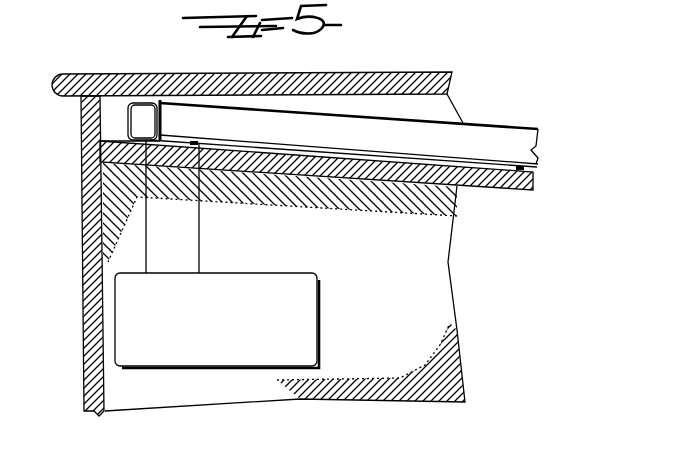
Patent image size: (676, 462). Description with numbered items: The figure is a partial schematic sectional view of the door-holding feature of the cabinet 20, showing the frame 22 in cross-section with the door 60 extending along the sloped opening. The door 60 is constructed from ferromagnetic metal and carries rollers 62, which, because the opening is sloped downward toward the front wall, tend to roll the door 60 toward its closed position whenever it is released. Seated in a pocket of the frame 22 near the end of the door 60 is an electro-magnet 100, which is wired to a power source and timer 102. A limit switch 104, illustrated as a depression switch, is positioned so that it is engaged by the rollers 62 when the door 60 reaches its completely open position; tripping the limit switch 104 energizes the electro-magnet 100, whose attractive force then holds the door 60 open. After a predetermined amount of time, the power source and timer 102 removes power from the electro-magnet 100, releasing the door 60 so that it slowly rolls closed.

The cabinet 20 is at (500, 84).
The frame 22 is at (380, 72).
The door 60 is at (505, 126).
The rollers 62 is at (186, 148).
The electro-magnet 100 is at (142, 115).
The power source and timer 102 is at (319, 319).
The limit switch 104 is at (196, 143).